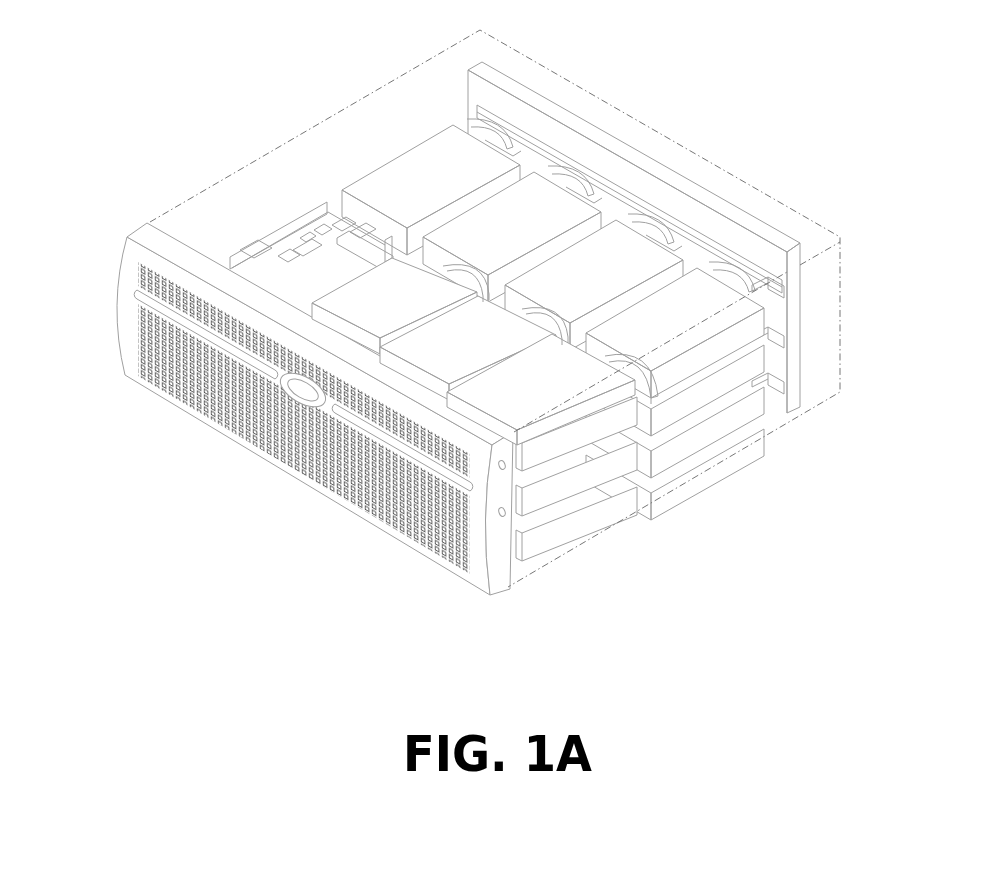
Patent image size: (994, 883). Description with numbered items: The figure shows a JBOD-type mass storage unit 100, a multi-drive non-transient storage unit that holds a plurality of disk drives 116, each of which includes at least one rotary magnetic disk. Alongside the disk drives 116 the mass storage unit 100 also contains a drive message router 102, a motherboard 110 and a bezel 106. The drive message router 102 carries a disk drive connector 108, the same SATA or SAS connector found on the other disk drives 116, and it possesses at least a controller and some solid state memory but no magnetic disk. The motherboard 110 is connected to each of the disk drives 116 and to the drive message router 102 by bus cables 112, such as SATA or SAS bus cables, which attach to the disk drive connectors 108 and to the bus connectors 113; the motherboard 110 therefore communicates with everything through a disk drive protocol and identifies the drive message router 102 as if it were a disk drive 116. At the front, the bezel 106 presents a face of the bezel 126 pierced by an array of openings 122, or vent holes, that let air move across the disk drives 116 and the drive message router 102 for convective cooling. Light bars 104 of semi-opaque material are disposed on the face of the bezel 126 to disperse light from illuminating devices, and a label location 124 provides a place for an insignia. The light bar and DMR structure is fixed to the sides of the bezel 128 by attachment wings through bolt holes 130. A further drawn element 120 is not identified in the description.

The mass storage unit 100 is at (730, 80).
The drive message router 102 is at (250, 240).
The light bars 104 is at (128, 372).
The bezel 106 is at (498, 595).
The disk drive connector 108 is at (357, 237).
The motherboard 110 is at (519, 82).
The bus cables 112 is at (768, 293).
The bus connectors 113 is at (713, 237).
The disk drives 116 is at (440, 130).
The enclosure 120 is at (278, 143).
The openings 122 is at (130, 374).
The label location 124 is at (297, 396).
The face of the bezel 126 is at (473, 484).
The sides of the bezel 128 is at (136, 291).
The bolt holes 130 is at (508, 512).